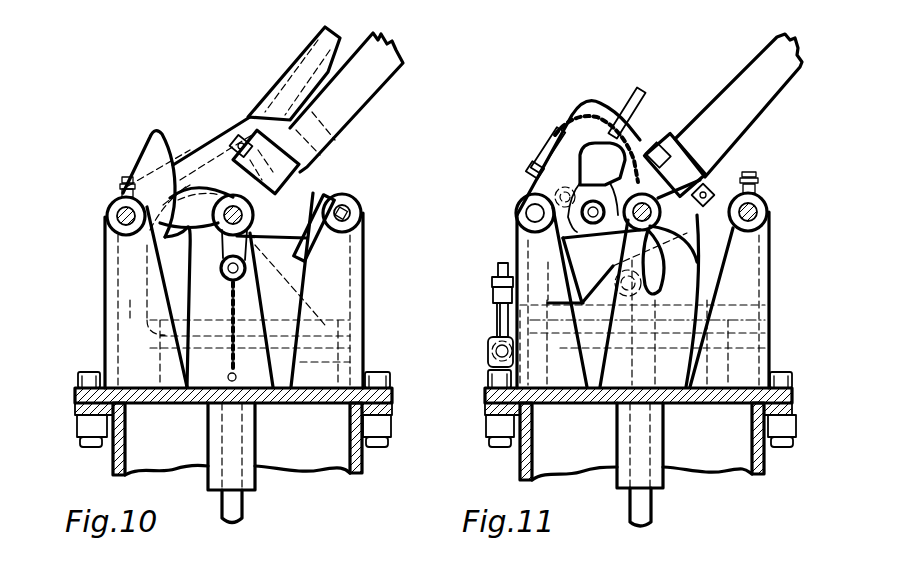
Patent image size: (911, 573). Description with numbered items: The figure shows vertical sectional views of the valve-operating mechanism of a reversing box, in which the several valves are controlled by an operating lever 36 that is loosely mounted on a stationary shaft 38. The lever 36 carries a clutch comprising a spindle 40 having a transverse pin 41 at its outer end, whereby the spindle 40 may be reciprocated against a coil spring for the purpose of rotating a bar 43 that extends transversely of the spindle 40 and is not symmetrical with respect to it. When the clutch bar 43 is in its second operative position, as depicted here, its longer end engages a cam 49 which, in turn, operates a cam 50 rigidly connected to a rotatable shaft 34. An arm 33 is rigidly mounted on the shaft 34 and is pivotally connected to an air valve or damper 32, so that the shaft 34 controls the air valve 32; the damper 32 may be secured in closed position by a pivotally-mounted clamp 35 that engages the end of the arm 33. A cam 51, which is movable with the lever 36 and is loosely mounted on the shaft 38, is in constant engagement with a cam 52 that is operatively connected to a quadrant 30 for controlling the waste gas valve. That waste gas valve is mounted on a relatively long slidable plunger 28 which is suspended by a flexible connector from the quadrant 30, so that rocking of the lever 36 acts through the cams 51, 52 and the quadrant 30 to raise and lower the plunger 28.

In FIG. 10, the slidable plunger 28 is at (236, 508).
In FIG. 11, the slidable plunger 28 is at (645, 509).
In FIG. 10, the quadrant 30 is at (320, 188).
In FIG. 11, the quadrant 30 is at (573, 108).
In FIG. 10, the air valve or damper 32 is at (331, 66).
In FIG. 11, the air valve or damper 32 is at (768, 306).
In FIG. 10, the arm 33 is at (225, 133).
In FIG. 11, the arm 33 is at (768, 260).
In FIG. 10, the rotatable shaft 34 is at (107, 219).
In FIG. 11, the rotatable shaft 34 is at (766, 204).
In FIG. 11, the pivotally-mounted clamp 35 is at (495, 281).
In FIG. 10, the operating lever 36 is at (377, 77).
In FIG. 11, the operating lever 36 is at (757, 100).
In FIG. 10, the stationary shaft 38 is at (217, 173).
In FIG. 10, the spindle 40 is at (360, 245).
In FIG. 10, the transverse pin 41 is at (353, 212).
In FIG. 10, the clutch bar 43 is at (317, 175).
In FIG. 11, the clutch bar 43 is at (658, 147).
In FIG. 10, the cam 49 is at (221, 270).
In FIG. 11, the cam 49 is at (593, 127).
In FIG. 10, the cam 50 is at (142, 166).
In FIG. 11, the cam 50 is at (717, 187).
In FIG. 11, the cam 51 is at (567, 238).
In FIG. 11, the cam 52 is at (543, 182).